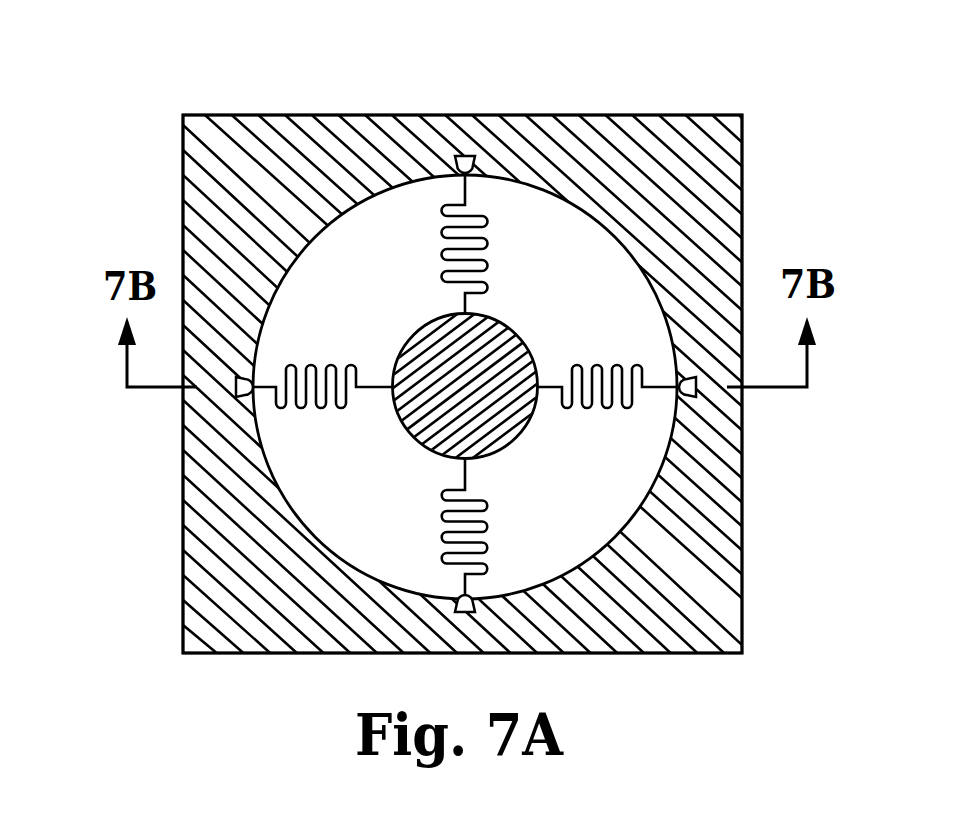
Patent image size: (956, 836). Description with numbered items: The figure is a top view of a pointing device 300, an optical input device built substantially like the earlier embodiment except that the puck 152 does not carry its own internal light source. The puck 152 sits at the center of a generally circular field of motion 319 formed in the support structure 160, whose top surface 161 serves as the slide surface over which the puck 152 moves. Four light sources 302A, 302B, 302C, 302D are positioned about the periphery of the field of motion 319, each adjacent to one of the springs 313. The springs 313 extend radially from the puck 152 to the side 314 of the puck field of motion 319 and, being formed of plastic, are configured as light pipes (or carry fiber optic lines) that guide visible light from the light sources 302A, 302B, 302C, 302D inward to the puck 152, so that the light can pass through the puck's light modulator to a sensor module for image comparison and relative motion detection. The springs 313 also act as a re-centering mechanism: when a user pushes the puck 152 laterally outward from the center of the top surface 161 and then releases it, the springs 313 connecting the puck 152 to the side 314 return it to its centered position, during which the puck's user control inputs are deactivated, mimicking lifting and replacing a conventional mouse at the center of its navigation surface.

The pointing device 300 is at (125, 110).
The support structure 160 is at (388, 226).
The top surface 161 is at (388, 282).
The light source 302A is at (476, 160).
The light source 302B is at (694, 393).
The light source 302C is at (478, 604).
The light source 302D is at (238, 383).
The field of motion 319 is at (597, 278).
The puck 152 is at (503, 345).
The springs 313 is at (628, 410).
The side 314 is at (728, 527).